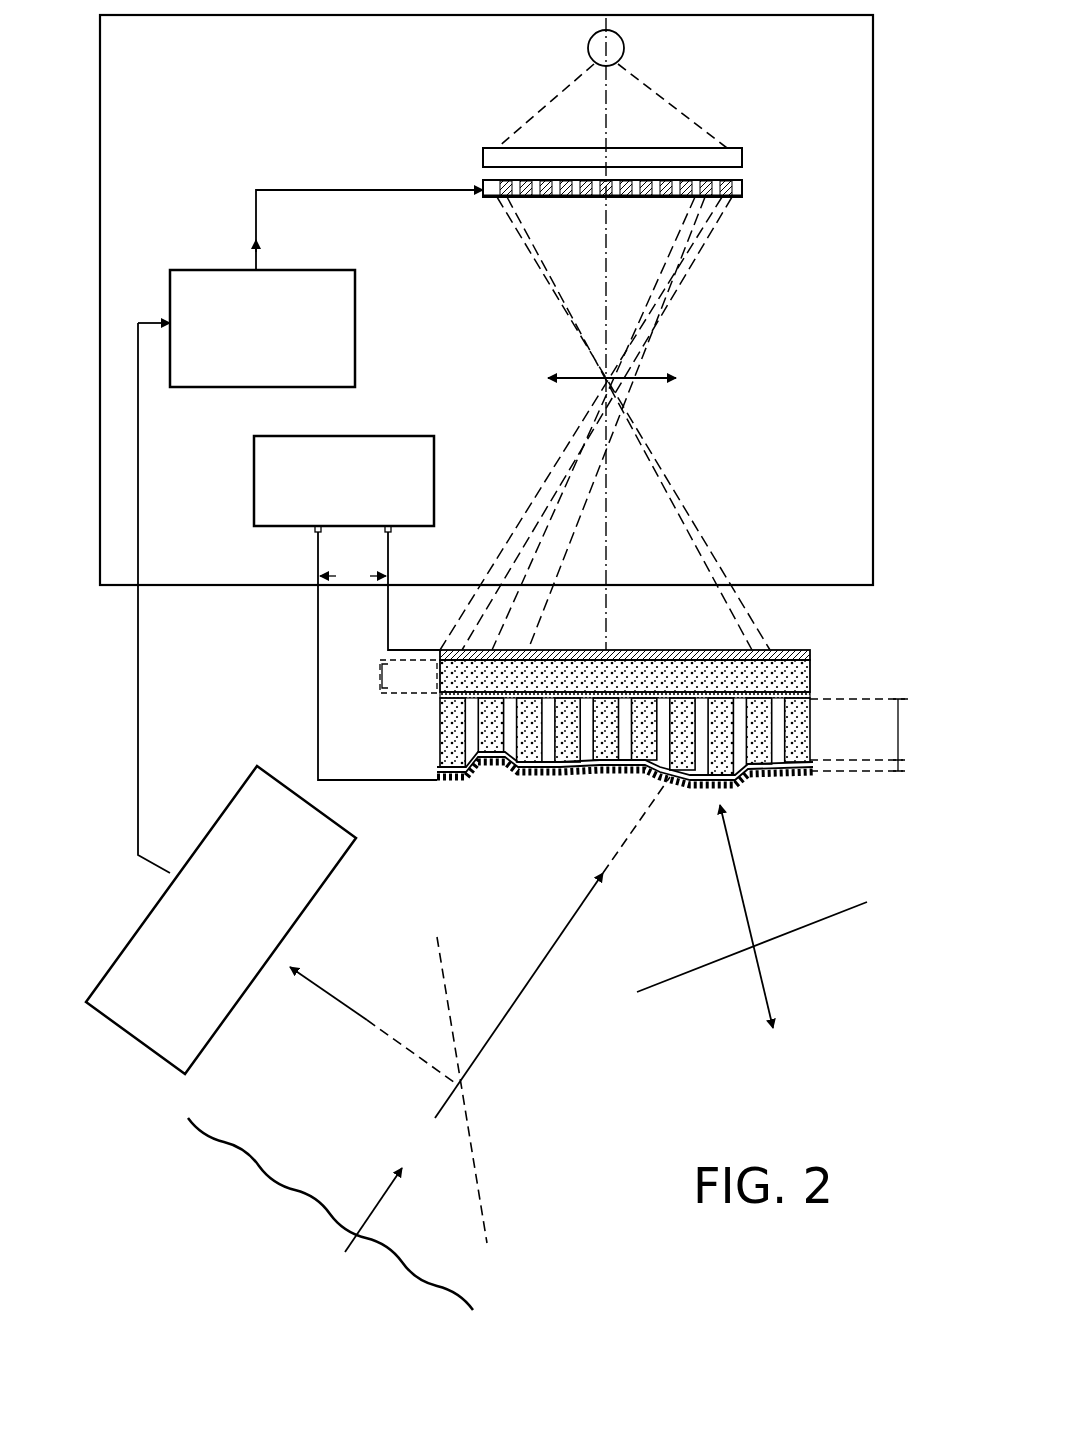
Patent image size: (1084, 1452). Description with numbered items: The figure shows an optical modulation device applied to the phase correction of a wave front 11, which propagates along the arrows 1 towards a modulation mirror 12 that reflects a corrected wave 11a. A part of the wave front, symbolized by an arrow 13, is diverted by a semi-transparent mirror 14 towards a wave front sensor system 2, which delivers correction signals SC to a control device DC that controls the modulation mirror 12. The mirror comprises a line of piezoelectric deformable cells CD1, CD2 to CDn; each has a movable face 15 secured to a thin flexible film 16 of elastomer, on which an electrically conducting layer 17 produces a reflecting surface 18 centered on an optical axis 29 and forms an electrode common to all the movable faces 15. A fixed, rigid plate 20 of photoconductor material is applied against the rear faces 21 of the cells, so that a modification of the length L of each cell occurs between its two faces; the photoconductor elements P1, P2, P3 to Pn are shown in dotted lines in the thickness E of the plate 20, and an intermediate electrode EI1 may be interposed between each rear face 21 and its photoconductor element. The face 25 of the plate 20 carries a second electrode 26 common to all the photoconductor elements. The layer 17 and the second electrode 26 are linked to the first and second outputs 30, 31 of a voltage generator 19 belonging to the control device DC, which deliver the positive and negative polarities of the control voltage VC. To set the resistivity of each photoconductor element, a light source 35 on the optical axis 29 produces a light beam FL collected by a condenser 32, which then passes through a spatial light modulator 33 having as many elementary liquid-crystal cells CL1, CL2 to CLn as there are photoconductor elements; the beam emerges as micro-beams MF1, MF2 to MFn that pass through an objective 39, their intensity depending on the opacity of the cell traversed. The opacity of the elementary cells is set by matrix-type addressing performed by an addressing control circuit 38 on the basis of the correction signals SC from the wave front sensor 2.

The arrows I 1 is at (540, 965).
The wave front sensor system 2 is at (138, 1045).
The wave front 11 is at (432, 1280).
The corrected wave 11a is at (838, 922).
The modulation mirror 12 is at (725, 808).
The arrow 13 is at (320, 992).
The semi-transparent mirror 14 is at (476, 1170).
The movable face 15 is at (812, 770).
The flexible film 16 is at (800, 785).
The electrically conducting layer 17 is at (805, 780).
The reflecting surface 18 is at (485, 828).
The voltage generator 19 is at (283, 443).
The plate of photoconductor material 20 is at (810, 678).
The rear faces 21 is at (803, 706).
The face of the plate 25 is at (810, 655).
The second electrode 26 is at (445, 650).
The optical axis 29 is at (608, 86).
The first output 30 is at (316, 532).
The second output 31 is at (387, 531).
The condenser 32 is at (483, 157).
The spatial light modulator 33 is at (745, 188).
The light source 35 is at (626, 52).
The addressing control circuit 38 is at (178, 273).
The objective 39 is at (660, 378).
The elementary cell CL1 is at (718, 200).
The elementary cell CL2 is at (700, 182).
The elementary cell CLn is at (497, 200).
The deformable cell CD1 is at (450, 745).
The deformable cell CD2 is at (490, 758).
The deformable cell CDn is at (805, 730).
The thickness of the photoconductor plate E is at (382, 676).
The intermediate electrode EI1 is at (810, 697).
The light beam FL is at (553, 113).
The length of the deformable cell L is at (866, 735).
The micro-beam MF1 is at (700, 221).
The micro-beam MF2 is at (685, 252).
The micro-beam MFn is at (532, 240).
The photoconductor element P1 is at (440, 676).
The photoconductor element P2 is at (497, 650).
The photoconductor element P3 is at (533, 650).
The photoconductor element Pn is at (792, 650).
The correction signals SC is at (138, 790).
The control voltage VC is at (353, 576).
The control device DC is at (222, 600).